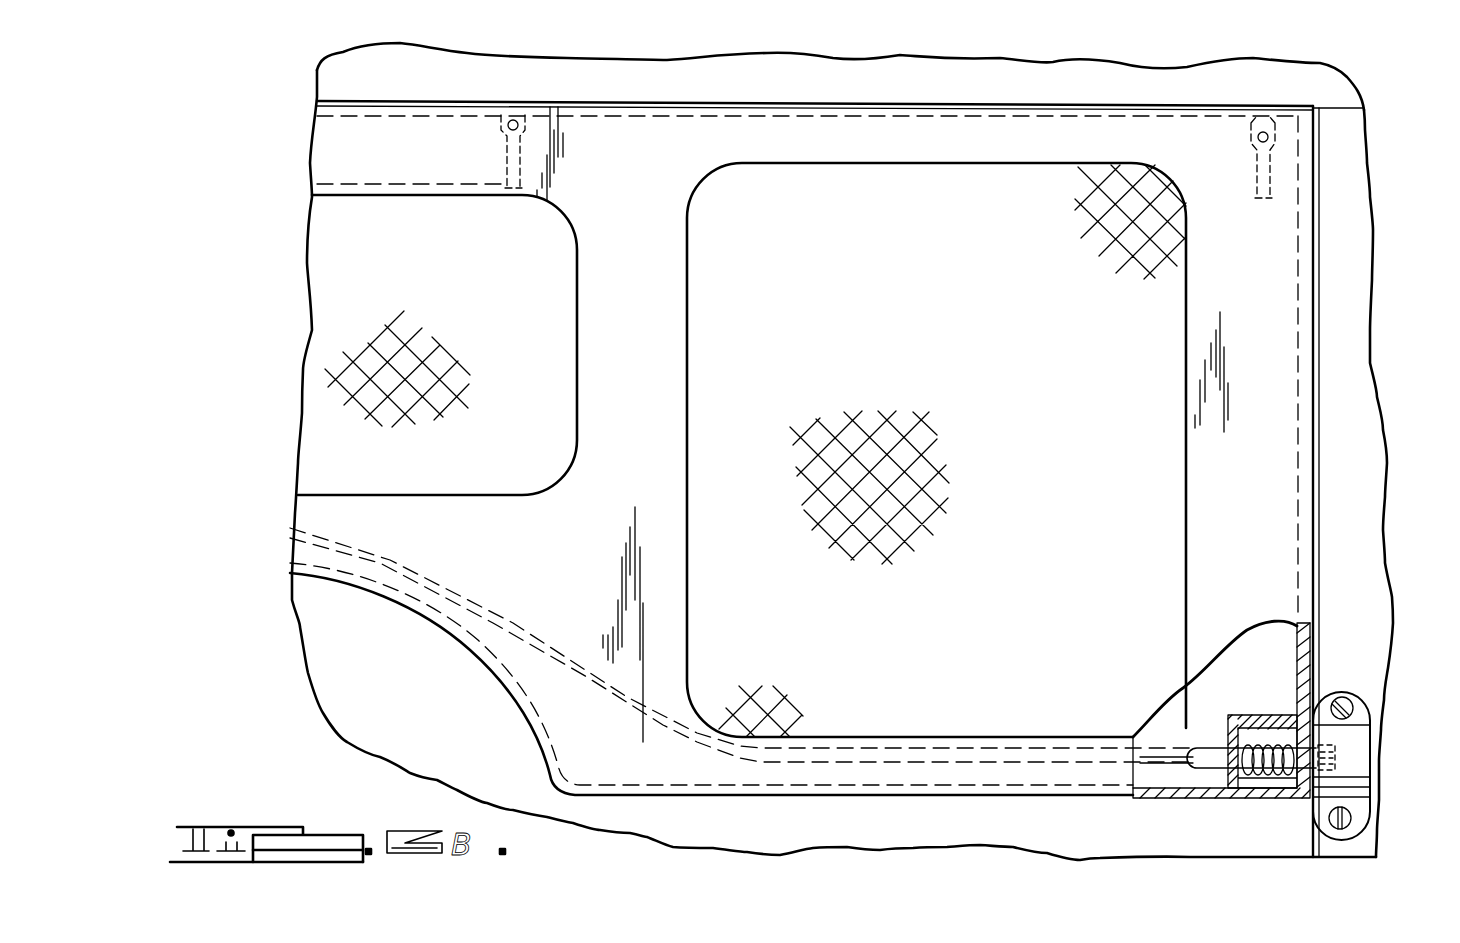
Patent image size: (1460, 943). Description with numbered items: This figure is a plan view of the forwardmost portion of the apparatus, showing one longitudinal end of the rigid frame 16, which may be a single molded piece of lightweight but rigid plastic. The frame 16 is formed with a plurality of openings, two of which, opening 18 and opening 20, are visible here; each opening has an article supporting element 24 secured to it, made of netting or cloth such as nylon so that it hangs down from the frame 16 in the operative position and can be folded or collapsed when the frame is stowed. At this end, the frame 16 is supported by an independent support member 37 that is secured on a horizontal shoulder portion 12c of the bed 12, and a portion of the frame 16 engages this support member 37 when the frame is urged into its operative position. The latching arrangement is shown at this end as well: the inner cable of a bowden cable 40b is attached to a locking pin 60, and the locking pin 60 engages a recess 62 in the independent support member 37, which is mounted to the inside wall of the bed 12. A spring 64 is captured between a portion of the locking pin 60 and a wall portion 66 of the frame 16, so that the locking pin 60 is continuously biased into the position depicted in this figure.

The rigid frame 16 is at (318, 78).
The bed 12 is at (1335, 103).
The horizontal shoulder portion 12c is at (1368, 522).
The opening 18 is at (980, 163).
The opening 20 is at (470, 276).
The article supporting element 24 is at (1025, 602).
The bowden cable 40b is at (930, 750).
The locking pin 60 is at (1300, 752).
The recess 62 is at (1340, 758).
The spring 64 is at (1243, 722).
The wall portion 66 is at (1235, 737).
The independent support member 37 is at (1345, 682).